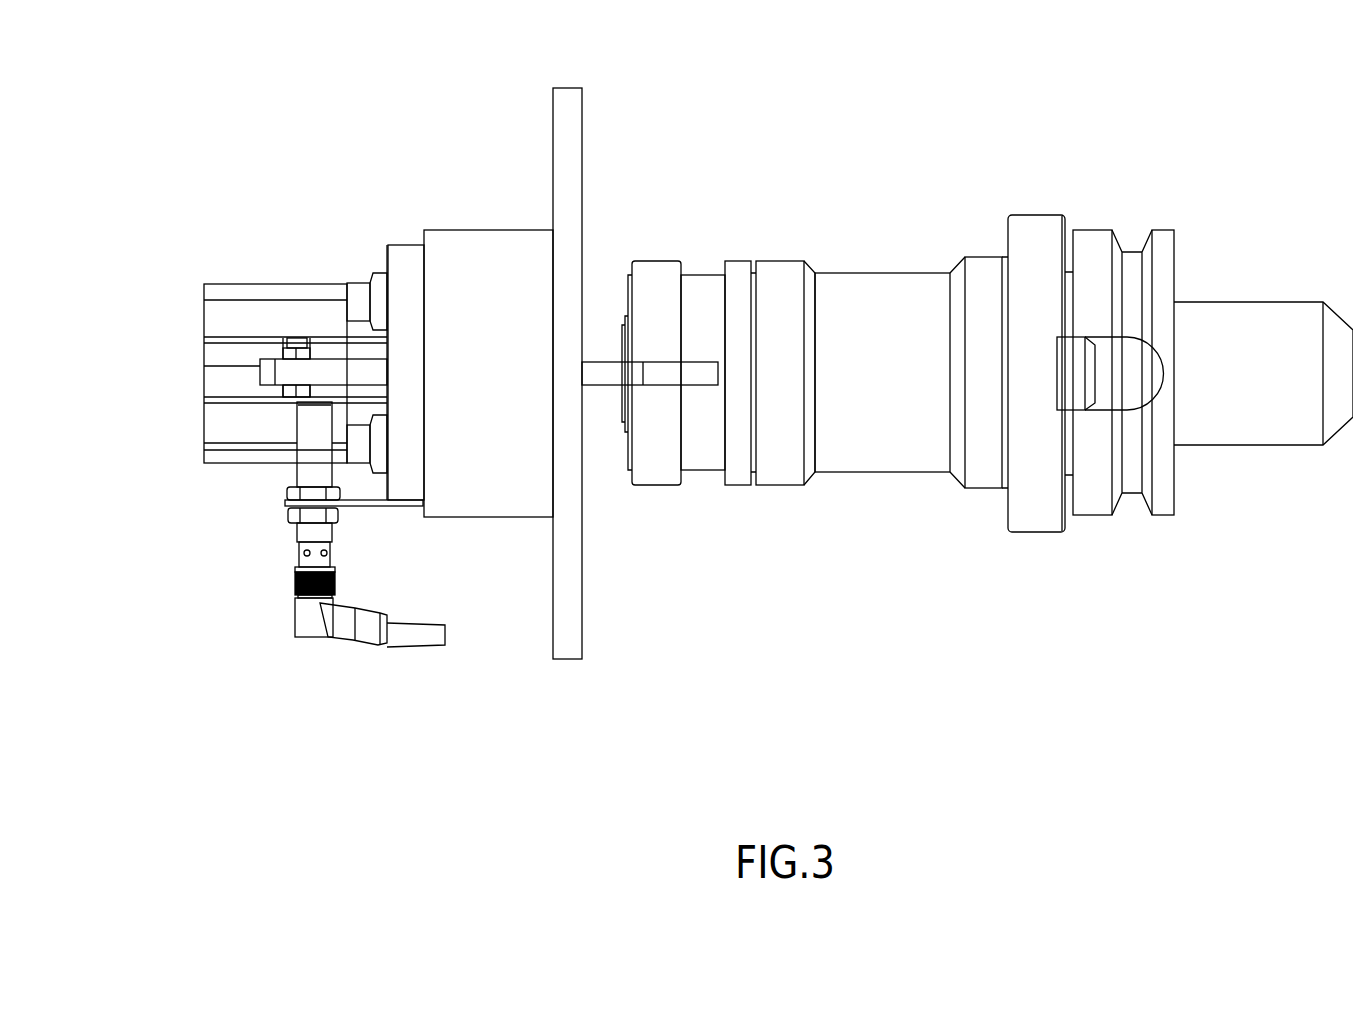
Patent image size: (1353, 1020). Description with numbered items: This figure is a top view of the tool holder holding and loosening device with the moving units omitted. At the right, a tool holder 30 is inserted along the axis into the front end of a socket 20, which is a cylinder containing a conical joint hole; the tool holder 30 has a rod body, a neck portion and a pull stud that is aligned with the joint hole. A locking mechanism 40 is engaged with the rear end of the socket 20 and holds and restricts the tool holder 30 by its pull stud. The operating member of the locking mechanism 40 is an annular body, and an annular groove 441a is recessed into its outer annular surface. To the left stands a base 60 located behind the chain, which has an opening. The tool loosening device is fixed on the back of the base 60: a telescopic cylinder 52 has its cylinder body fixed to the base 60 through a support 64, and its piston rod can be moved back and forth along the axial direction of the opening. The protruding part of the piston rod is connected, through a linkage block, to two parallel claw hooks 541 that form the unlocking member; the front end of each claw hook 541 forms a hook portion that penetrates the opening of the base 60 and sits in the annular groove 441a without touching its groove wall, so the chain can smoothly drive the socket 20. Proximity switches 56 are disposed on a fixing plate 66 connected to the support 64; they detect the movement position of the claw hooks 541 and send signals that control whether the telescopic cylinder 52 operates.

The socket 20 is at (894, 476).
The tool holder 30 is at (1251, 298).
The locking mechanism 40 is at (656, 254).
The annular groove 441a is at (703, 273).
The telescopic cylinder 52 is at (201, 314).
The claw hook 541 is at (607, 375).
The proximity switch 56 is at (312, 613).
The base 60 is at (597, 88).
The support 64 is at (397, 258).
The fixing plate 66 is at (395, 506).